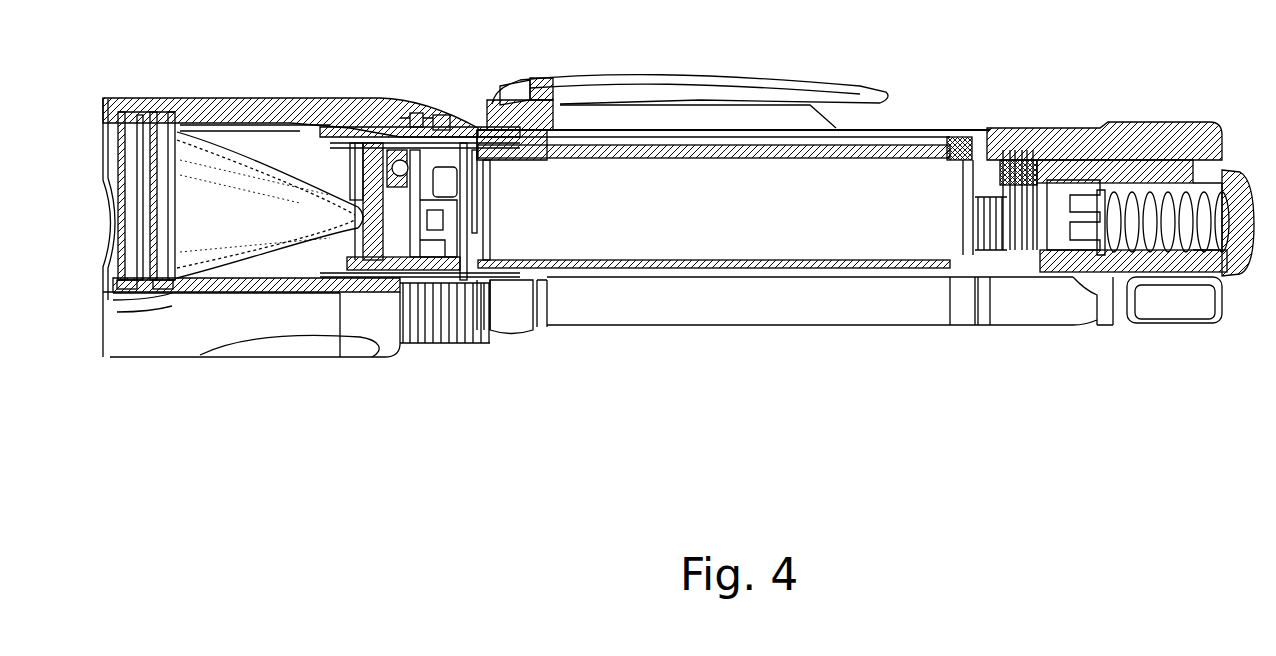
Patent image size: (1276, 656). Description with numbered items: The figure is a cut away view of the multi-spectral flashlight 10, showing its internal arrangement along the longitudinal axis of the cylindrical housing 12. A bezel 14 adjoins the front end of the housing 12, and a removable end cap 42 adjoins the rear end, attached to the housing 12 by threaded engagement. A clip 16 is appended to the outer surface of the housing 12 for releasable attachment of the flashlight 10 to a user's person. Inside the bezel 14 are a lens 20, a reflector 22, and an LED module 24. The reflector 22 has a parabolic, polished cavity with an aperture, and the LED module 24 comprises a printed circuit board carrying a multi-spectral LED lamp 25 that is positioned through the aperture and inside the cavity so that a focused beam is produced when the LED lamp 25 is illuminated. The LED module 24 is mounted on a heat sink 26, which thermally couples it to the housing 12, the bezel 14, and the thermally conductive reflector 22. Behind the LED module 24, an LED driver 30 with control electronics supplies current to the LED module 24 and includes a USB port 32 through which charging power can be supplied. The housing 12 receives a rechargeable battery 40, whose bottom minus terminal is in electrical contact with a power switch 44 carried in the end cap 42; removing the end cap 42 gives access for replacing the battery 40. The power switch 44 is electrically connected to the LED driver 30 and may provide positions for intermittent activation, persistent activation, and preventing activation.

The multi-spectral flashlight 10 is at (975, 330).
The cylindrical housing 12 is at (620, 320).
The bezel 14 is at (197, 98).
The clip 16 is at (712, 78).
The lens 20 is at (153, 240).
The reflector 22 is at (277, 98).
The LED module 24 is at (343, 98).
The multi-spectral LED lamp 25 is at (243, 211).
The heat sink 26 is at (425, 283).
The LED driver 30 is at (427, 130).
The USB port 32 is at (410, 120).
The battery 40 is at (920, 162).
The end cap 42 is at (1033, 127).
The power switch 44 is at (1232, 177).